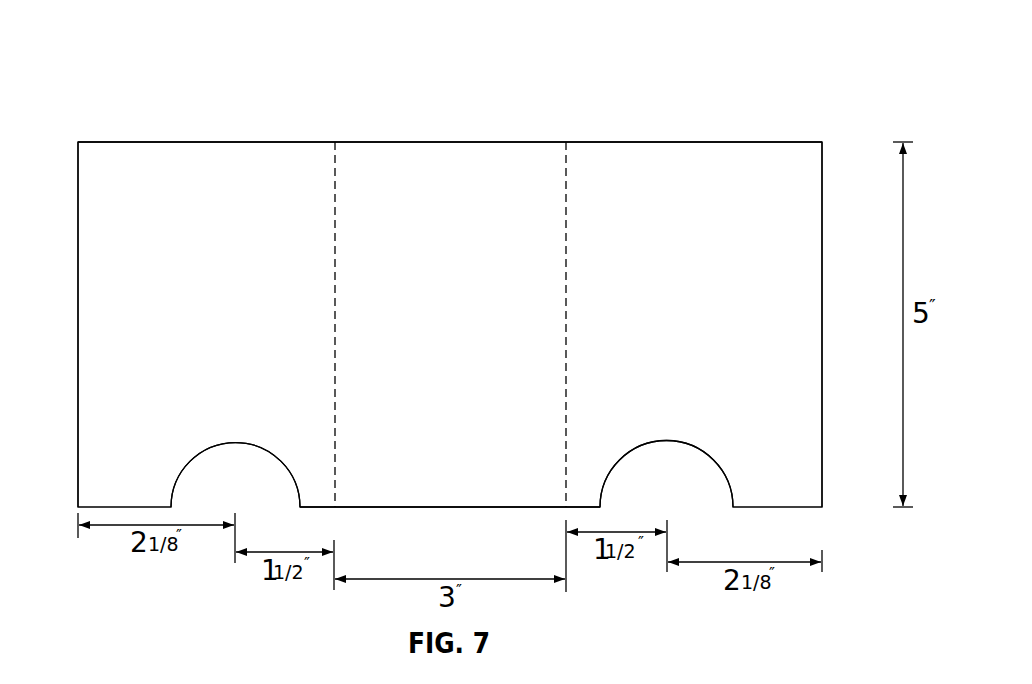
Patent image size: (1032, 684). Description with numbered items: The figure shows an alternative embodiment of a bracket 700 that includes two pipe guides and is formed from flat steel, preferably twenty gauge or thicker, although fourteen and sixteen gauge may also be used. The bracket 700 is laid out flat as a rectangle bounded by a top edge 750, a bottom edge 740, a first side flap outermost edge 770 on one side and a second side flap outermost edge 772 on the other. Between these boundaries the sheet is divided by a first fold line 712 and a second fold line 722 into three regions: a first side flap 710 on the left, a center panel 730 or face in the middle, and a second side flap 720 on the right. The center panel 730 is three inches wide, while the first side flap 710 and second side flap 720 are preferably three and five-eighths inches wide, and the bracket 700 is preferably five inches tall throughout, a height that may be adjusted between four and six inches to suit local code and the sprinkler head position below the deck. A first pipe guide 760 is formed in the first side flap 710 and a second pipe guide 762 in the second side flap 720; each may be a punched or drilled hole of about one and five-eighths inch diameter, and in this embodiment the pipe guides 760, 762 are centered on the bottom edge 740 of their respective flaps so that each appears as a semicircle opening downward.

The bracket 700 is at (126, 42).
The first side flap 710 is at (117, 163).
The first fold line 712 is at (335, 158).
The second side flap 720 is at (708, 160).
The second fold line 722 is at (566, 158).
The center panel 730 is at (475, 160).
The bottom edge 740 is at (405, 508).
The top edge 750 is at (204, 142).
The first pipe guide 760 is at (195, 458).
The second pipe guide 762 is at (716, 462).
The first side flap outermost edge 770 is at (78, 298).
The second side flap outermost edge 772 is at (822, 268).